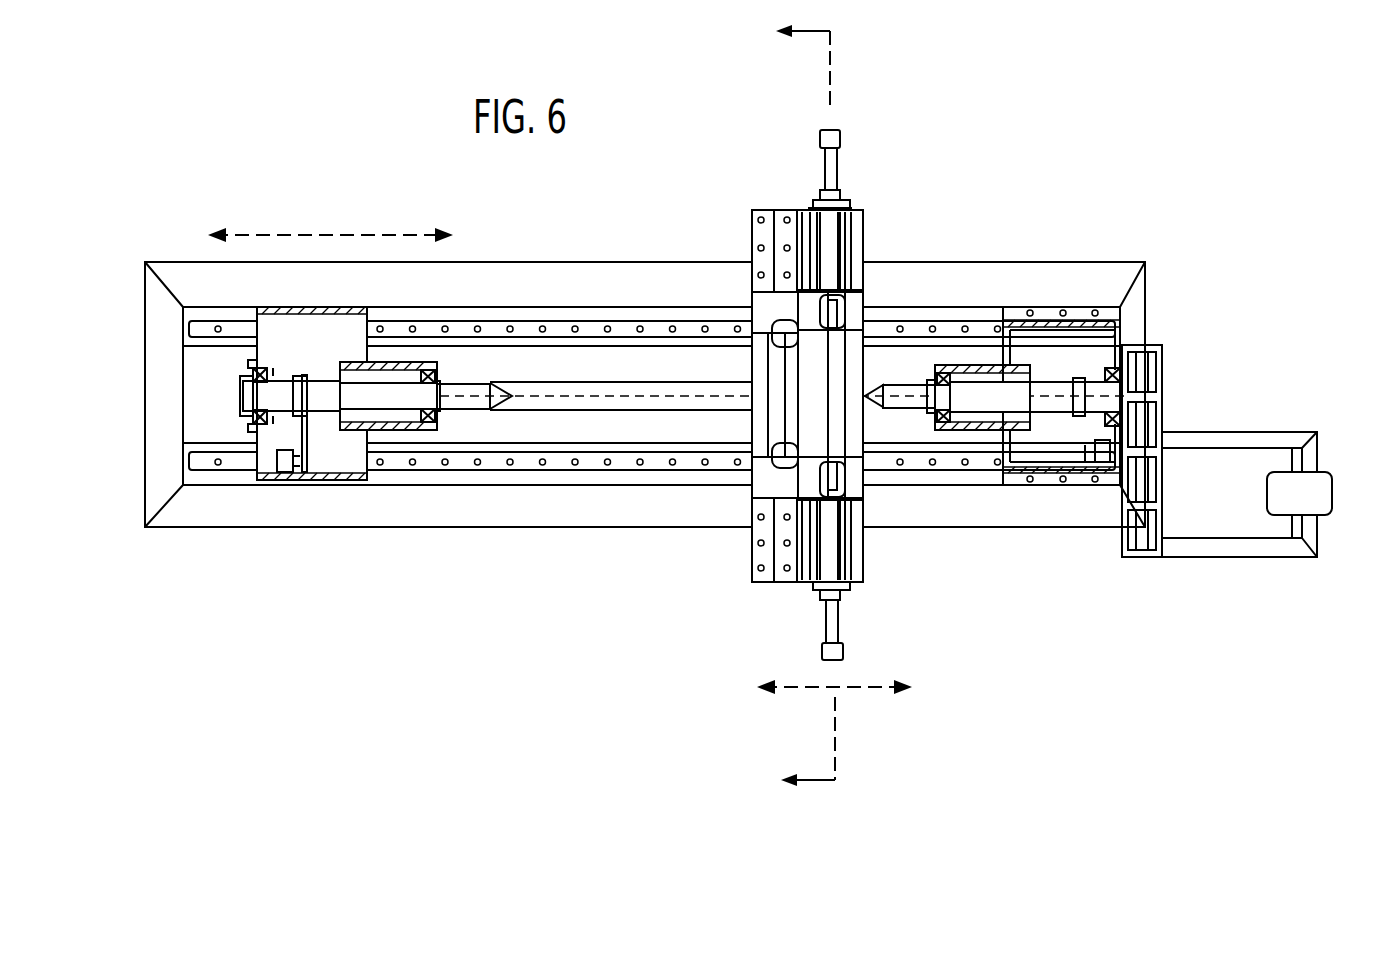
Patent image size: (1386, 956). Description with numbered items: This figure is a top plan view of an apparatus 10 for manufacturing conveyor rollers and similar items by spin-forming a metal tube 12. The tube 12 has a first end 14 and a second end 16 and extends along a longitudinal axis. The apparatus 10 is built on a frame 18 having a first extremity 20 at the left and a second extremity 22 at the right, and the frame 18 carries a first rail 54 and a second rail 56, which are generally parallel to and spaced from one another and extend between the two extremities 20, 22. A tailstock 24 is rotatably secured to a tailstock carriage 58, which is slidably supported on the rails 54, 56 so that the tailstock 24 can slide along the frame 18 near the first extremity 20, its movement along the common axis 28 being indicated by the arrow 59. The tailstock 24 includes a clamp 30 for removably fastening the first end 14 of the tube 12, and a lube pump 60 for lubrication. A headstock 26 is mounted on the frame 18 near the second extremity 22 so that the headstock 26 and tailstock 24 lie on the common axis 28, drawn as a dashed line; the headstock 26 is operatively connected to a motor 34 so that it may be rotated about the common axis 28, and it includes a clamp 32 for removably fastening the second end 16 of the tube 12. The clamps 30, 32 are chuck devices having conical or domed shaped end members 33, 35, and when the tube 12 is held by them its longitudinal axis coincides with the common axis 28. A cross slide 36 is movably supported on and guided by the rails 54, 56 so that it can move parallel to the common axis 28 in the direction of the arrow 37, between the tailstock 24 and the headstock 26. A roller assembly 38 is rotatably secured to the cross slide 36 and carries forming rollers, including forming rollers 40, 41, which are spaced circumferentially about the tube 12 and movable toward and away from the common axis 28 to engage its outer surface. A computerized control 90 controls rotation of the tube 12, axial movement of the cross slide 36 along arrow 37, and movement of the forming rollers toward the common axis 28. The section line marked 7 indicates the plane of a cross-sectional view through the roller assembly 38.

The section line 7- 7 is at (817, 407).
The apparatus 10 is at (890, 64).
The metal tube 12 is at (652, 383).
The first end 14 is at (505, 383).
The second end 16 is at (877, 378).
The frame 18 is at (515, 508).
The first extremity 20 is at (181, 518).
The second extremity 22 is at (1100, 273).
The tailstock 24 is at (330, 393).
The headstock 26 is at (1003, 400).
The common axis 28 is at (706, 396).
The clamp 30 is at (487, 404).
The clamp 32 is at (893, 406).
The end member 33 is at (503, 408).
The motor 34 is at (1235, 527).
The end member 35 is at (878, 410).
The cross slide 36 is at (737, 604).
The arrow 37 is at (812, 690).
The roller assembly 38 is at (870, 307).
The forming roller 40 is at (843, 275).
The forming roller 41 is at (843, 482).
The first rail 54 is at (596, 462).
The second rail 56 is at (557, 322).
The tailstock carriage 58 is at (275, 484).
The arrow 59 is at (333, 235).
The lube pump 60 is at (292, 470).
The computerized control 90 is at (1328, 497).